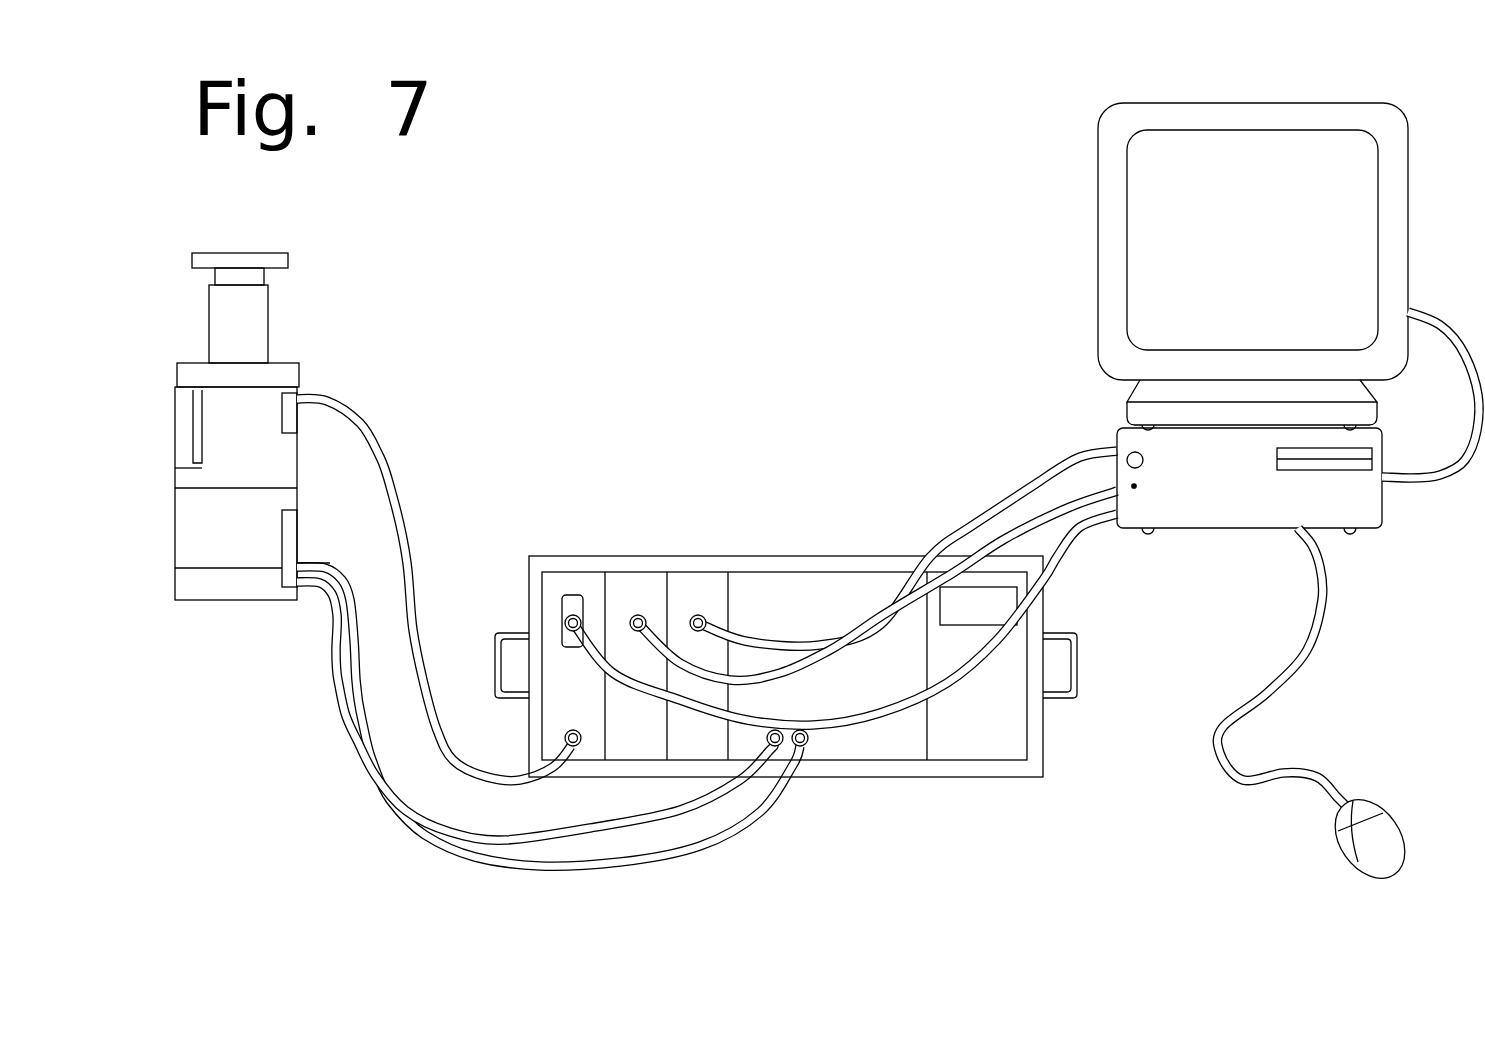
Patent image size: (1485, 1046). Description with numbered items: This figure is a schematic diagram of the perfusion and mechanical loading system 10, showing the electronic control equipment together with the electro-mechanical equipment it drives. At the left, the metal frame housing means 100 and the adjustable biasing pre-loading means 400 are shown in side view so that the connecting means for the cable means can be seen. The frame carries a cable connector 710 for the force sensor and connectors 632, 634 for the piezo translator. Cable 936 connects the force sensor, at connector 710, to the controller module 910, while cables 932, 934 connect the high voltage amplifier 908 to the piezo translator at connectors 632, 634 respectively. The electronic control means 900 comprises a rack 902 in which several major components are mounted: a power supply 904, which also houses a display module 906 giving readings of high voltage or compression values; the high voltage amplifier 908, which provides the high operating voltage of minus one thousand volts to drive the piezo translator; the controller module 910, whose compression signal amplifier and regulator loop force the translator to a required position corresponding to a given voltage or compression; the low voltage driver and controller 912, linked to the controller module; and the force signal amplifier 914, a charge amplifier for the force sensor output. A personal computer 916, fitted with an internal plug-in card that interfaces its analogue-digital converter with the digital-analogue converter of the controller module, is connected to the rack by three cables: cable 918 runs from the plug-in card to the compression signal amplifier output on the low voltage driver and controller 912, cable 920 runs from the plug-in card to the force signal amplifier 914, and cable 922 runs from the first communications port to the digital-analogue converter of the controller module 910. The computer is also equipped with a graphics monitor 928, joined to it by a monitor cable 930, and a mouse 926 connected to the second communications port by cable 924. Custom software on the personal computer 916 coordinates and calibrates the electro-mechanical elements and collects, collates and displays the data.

The perfusion and mechanical loading system 10 is at (802, 248).
The metal frame housing means 100 is at (268, 665).
The adjustable biasing pre-loading means 400 is at (277, 225).
The cable connector 710 is at (299, 387).
The connector 632 is at (293, 563).
The connector 634 is at (327, 565).
The cable 936 is at (357, 403).
The cable 932 is at (373, 737).
The cable 934 is at (378, 807).
The electronic control means 900 is at (823, 628).
The rack 902 is at (1018, 767).
The 220V AC power supply 904 is at (953, 740).
The display module 906 is at (977, 627).
The high voltage amplifier 908 is at (858, 745).
The controller module 910 is at (595, 587).
The low voltage driver and controller 912 is at (655, 607).
The force signal amplifier 914 is at (698, 590).
The cable 918 is at (1080, 495).
The cable 920 is at (1033, 488).
The cable 922 is at (842, 720).
The personal computer 916 is at (1270, 515).
The graphics monitor 928 is at (1158, 195).
The monitor cable 930 is at (1421, 482).
The cable 924 is at (1230, 767).
The mouse 926 is at (1350, 815).